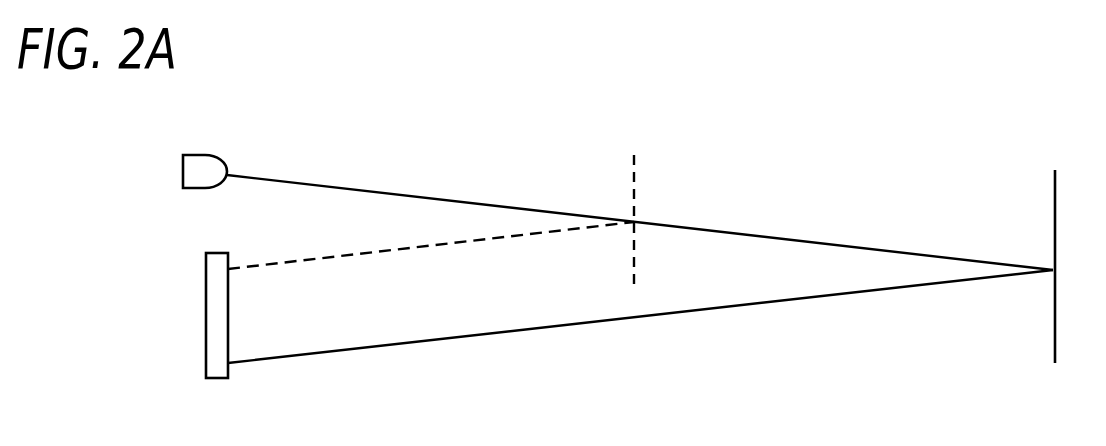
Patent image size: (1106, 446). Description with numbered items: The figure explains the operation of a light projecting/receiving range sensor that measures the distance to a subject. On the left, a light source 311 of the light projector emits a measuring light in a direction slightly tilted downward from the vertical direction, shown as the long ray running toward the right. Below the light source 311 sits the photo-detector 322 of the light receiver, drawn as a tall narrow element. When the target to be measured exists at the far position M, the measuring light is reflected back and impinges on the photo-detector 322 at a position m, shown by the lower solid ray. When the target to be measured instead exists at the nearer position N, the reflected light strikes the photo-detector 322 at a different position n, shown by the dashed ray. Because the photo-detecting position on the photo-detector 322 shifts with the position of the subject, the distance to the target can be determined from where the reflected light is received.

The light source 311 is at (212, 158).
The photo-detector 322 is at (217, 375).
The position n is at (228, 270).
The position m is at (228, 363).
The position N is at (635, 207).
The position M is at (1054, 251).